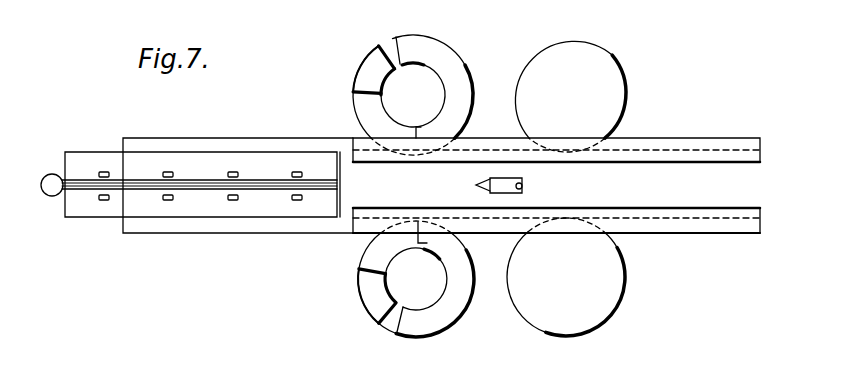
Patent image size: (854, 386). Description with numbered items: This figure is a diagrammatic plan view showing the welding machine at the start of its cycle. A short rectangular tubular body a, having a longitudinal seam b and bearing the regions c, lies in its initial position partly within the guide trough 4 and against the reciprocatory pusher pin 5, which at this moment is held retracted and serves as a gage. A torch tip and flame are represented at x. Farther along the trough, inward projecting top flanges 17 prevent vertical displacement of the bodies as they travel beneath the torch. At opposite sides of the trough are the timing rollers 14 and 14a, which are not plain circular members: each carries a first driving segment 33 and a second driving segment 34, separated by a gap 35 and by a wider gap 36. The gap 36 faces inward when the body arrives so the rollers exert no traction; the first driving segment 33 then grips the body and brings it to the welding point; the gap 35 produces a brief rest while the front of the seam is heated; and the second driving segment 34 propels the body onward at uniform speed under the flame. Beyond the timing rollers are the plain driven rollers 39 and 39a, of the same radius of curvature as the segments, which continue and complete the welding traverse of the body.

The guide trough 4 is at (285, 137).
The pusher pin 5 is at (47, 181).
The tubular body a is at (98, 216).
The longitudinal seam b is at (82, 187).
The regions c is at (162, 196).
The torch tip and flame x is at (477, 178).
The top flanges 17 is at (653, 163).
The roller 14 is at (416, 266).
The roller 14a is at (423, 82).
The first driving segment 33 is at (357, 74).
The second driving segment 34 is at (463, 62).
The gap 35 is at (386, 44).
The gap 36 is at (360, 118).
The plain driven roller 39 is at (620, 297).
The plain driven roller 39a is at (622, 82).